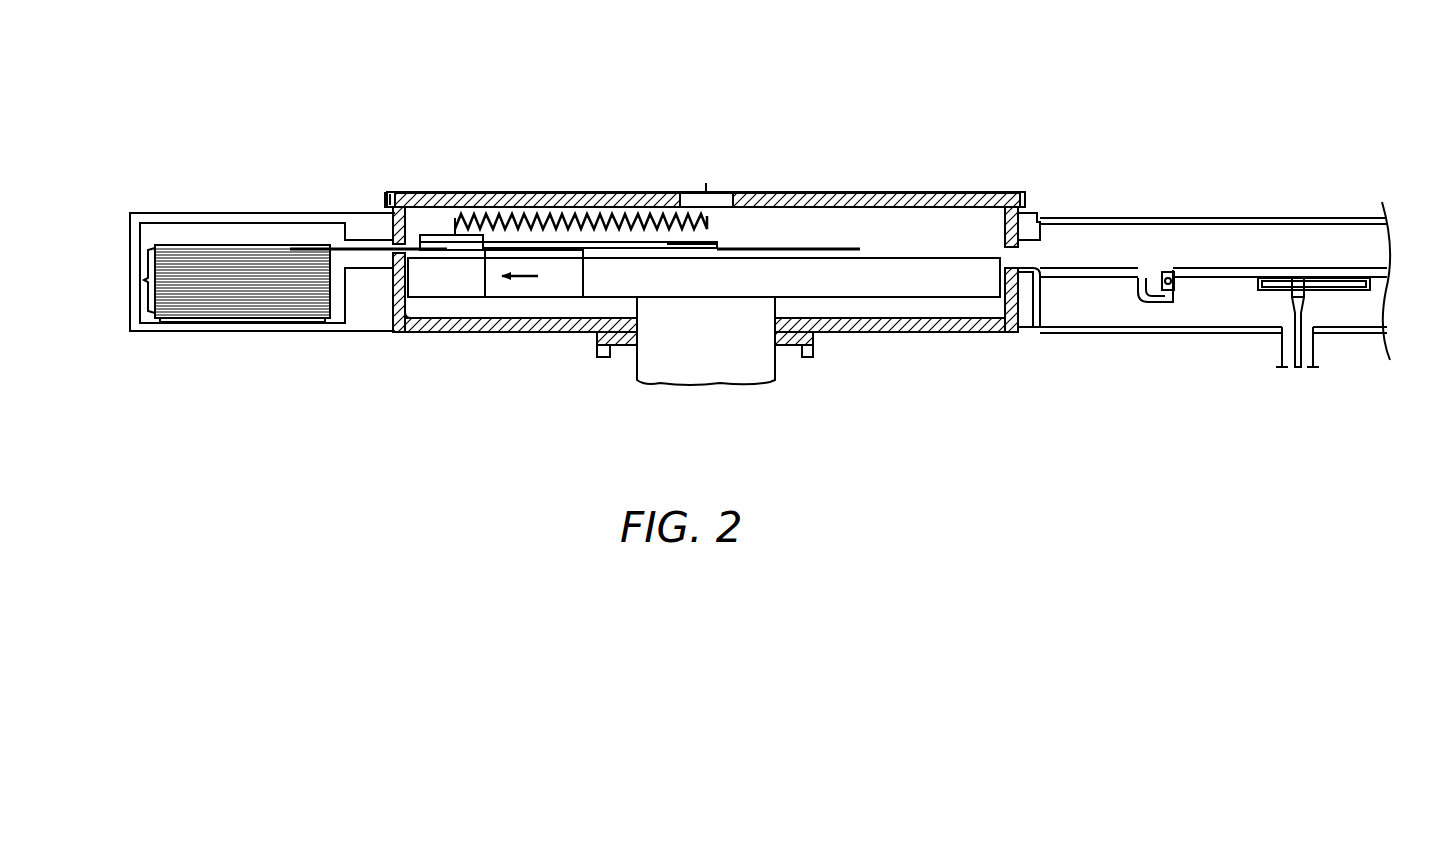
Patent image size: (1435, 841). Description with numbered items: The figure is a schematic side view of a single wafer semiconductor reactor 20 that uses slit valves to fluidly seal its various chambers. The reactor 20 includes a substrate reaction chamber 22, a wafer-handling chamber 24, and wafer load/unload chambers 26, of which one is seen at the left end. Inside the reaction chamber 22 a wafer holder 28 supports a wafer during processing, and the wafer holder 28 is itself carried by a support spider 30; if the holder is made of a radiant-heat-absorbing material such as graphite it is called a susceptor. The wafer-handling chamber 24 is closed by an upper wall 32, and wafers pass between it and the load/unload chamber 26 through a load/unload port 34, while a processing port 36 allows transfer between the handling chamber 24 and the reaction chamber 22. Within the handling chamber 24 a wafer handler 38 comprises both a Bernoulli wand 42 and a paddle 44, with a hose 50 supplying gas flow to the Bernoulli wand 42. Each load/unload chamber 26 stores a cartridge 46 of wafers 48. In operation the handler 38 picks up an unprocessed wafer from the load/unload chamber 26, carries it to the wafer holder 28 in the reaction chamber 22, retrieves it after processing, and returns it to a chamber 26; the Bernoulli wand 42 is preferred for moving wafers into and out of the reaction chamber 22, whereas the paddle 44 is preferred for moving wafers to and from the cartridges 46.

The single wafer semiconductor reactor 20 is at (492, 70).
The substrate reaction chamber 22 is at (1217, 213).
The wafer-handling chamber 24 is at (930, 193).
The wafer load/unload chamber 26 is at (178, 210).
The wafer holder 28 is at (1268, 268).
The support spider 30 is at (1310, 303).
The upper wall 32 is at (578, 193).
The load/unload port 34 is at (392, 262).
The processing port 36 is at (1033, 272).
The wafer handler 38 is at (727, 230).
The Bernoulli wand 42 is at (843, 245).
The paddle 44 is at (343, 268).
The cartridge 46 is at (145, 280).
The wafer 48 is at (205, 245).
The hose 50 is at (543, 218).